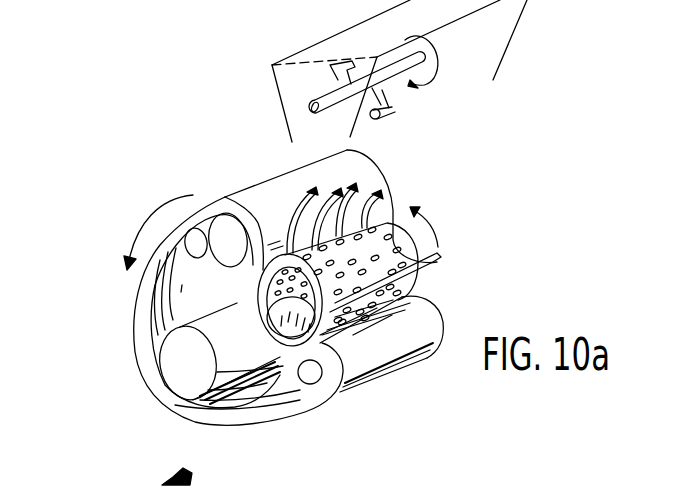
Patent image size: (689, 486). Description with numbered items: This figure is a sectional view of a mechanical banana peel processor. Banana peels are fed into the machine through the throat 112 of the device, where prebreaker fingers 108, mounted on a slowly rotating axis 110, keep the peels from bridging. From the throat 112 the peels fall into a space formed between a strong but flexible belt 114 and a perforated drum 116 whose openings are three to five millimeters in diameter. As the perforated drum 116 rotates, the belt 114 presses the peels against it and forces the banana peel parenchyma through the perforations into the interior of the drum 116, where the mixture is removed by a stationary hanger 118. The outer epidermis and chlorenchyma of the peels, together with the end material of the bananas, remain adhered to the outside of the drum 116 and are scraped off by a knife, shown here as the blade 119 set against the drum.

The crank handle 108 is at (393, 102).
The drive shaft 110 is at (308, 108).
The mounting plate 112 is at (308, 135).
The housing 114 is at (148, 290).
The perforated drum 116 is at (393, 240).
The inner cylinder 118 is at (297, 323).
The scraper blade 119 is at (438, 258).